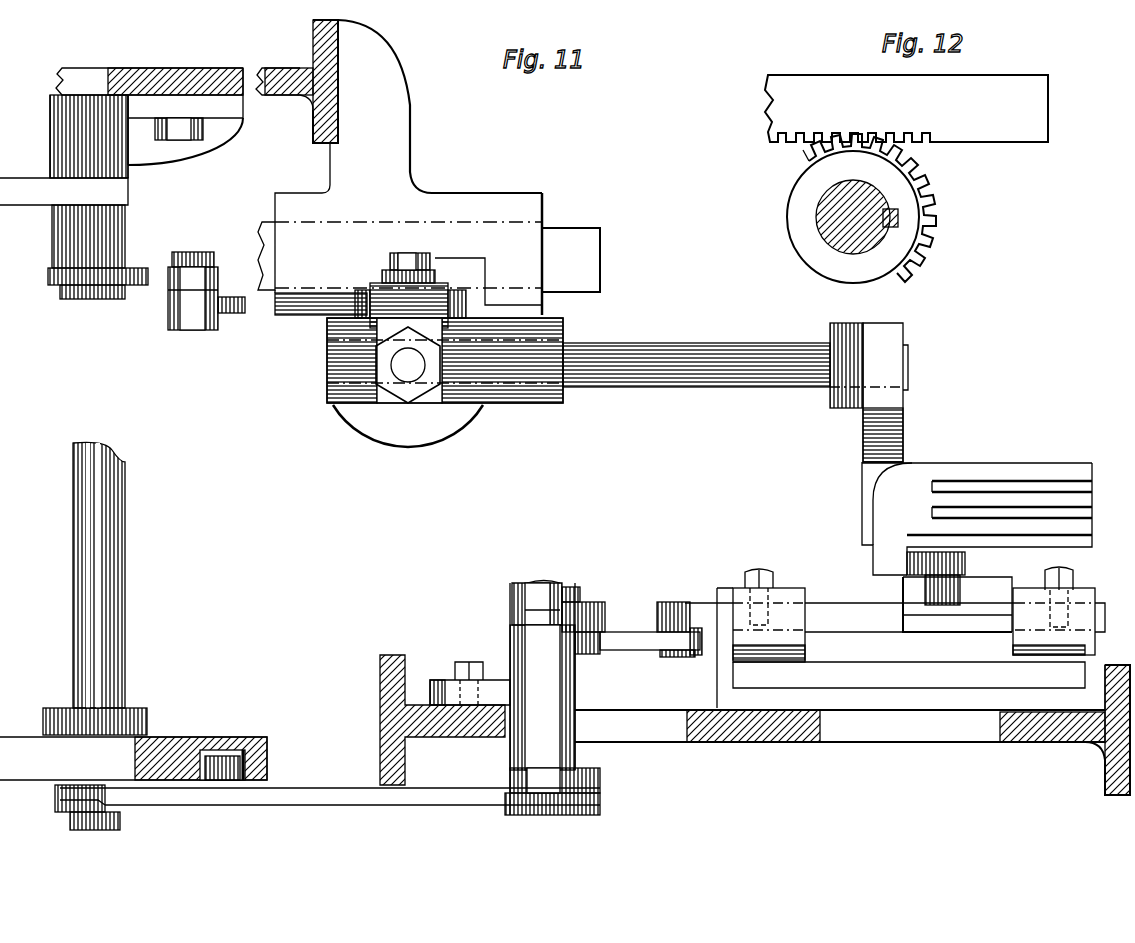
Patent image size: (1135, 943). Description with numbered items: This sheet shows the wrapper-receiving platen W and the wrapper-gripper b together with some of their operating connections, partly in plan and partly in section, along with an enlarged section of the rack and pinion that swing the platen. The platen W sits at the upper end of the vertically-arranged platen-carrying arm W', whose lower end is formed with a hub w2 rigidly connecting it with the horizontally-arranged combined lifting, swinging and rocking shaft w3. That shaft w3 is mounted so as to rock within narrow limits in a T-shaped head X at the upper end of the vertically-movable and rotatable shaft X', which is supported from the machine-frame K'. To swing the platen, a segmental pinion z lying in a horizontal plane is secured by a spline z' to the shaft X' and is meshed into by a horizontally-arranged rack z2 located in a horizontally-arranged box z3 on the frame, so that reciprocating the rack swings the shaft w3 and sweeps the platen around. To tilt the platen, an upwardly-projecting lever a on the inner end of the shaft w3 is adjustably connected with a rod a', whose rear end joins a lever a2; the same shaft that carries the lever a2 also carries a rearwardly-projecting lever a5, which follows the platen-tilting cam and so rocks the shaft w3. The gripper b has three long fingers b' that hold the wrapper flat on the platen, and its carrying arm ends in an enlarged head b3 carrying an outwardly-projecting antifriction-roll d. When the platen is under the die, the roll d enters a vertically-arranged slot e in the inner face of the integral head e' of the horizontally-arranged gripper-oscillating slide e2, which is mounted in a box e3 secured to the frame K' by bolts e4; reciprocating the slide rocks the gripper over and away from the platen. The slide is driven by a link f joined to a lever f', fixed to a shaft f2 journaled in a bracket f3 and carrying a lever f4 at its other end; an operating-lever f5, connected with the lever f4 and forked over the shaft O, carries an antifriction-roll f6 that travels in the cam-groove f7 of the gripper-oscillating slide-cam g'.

In FIG. 11, the rearwardly-projecting lever a5 is at (121, 197).
In FIG. 11, the lever a2 is at (133, 275).
In FIG. 11, the rod a' is at (292, 318).
In FIG. 11, the upwardly-projecting lever a is at (380, 315).
In FIG. 11, the box z3 is at (400, 253).
In FIG. 11, the rack z2 is at (571, 260).
In FIG. 12, the rack z2 is at (906, 108).
In FIG. 11, the T-shaped head X is at (445, 382).
In FIG. 11, the shaft w3 is at (632, 347).
In FIG. 11, the hub w2 is at (838, 337).
In FIG. 11, the platen-carrying arm W' is at (962, 512).
In FIG. 11, the wrapper-receiving platen W is at (922, 454).
In FIG. 11, the wrapper-gripper b is at (992, 493).
In FIG. 11, the fingers b' is at (999, 483).
In FIG. 11, the head b3 is at (936, 562).
In FIG. 11, the antifriction-roll d is at (942, 590).
In FIG. 11, the vertically-arranged slot e is at (957, 589).
In FIG. 11, the head e' is at (957, 604).
In FIG. 11, the gripper-oscillating slide e2 is at (895, 616).
In FIG. 11, the box e3 is at (906, 648).
In FIG. 11, the bolts e4 is at (1058, 580).
In FIG. 11, the machine-frame K' is at (852, 730).
In FIG. 11, the shaft f2 is at (542, 590).
In FIG. 11, the lever f' is at (542, 620).
In FIG. 11, the bracket f3 is at (578, 688).
In FIG. 11, the link f is at (651, 629).
In FIG. 11, the lever f4 is at (600, 782).
In FIG. 11, the operating-lever f5 is at (466, 795).
In FIG. 11, the shaft O is at (125, 665).
In FIG. 11, the gripper-oscillating slide-cam g' is at (133, 739).
In FIG. 11, the cam-groove f7 is at (225, 748).
In FIG. 11, the antifriction-roll f6 is at (250, 762).
In FIG. 12, the segmental pinion z is at (871, 208).
In FIG. 12, the shaft X' is at (826, 217).
In FIG. 12, the spline z' is at (932, 213).